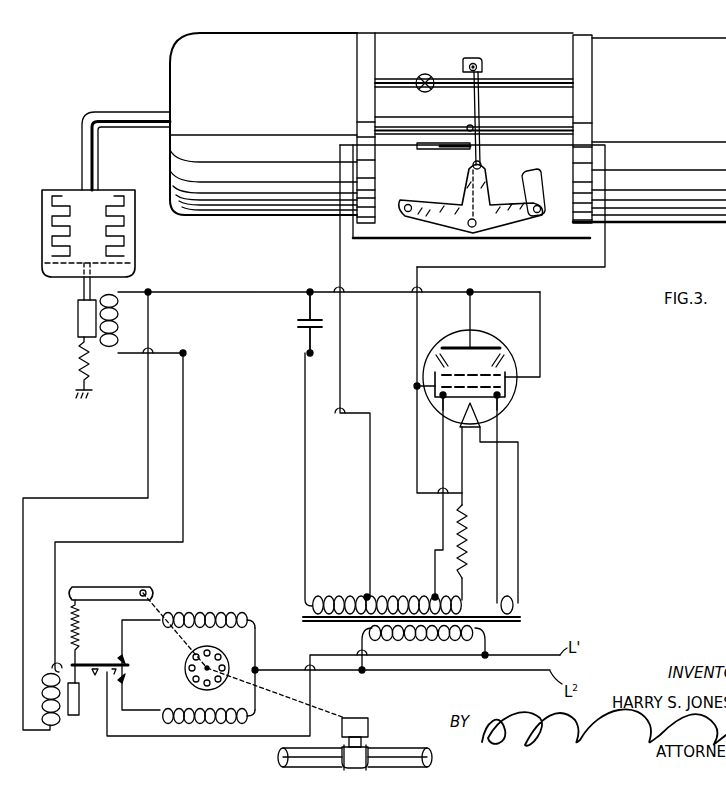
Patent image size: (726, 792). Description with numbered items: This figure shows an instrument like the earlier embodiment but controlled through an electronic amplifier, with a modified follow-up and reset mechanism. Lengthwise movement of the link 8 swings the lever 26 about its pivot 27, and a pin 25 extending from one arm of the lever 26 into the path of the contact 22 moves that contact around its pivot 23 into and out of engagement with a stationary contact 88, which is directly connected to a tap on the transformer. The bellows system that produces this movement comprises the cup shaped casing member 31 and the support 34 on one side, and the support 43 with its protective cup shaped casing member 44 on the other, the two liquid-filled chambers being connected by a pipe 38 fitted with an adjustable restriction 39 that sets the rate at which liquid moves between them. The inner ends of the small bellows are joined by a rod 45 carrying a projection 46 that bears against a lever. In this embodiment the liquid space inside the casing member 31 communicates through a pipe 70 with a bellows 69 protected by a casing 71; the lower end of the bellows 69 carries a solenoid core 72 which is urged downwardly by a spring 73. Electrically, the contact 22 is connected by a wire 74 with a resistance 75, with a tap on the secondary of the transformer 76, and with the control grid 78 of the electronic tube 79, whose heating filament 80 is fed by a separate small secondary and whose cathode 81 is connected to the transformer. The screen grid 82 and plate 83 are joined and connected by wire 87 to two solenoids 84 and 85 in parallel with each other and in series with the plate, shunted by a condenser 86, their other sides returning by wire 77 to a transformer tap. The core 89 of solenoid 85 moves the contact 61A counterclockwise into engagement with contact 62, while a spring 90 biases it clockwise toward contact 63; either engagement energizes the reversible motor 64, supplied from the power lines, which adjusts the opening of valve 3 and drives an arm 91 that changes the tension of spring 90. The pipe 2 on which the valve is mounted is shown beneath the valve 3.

The cup shaped casing member 31 is at (263, 37).
The support 34 is at (364, 33).
The pipe 38 is at (387, 79).
The adjustable restriction 39 is at (425, 74).
The pivot 23 is at (480, 63).
The rod 45 is at (389, 121).
The projection 46 is at (466, 125).
The contact 22 is at (481, 110).
The stationary contact 88 is at (420, 152).
The pin 25 is at (482, 165).
The lever 26 is at (430, 206).
The link 8 is at (537, 188).
The pivot 27 is at (472, 229).
The support 43 is at (591, 36).
The cup shaped casing member 44 is at (682, 38).
The wire 74 is at (606, 240).
The pipe 70 is at (122, 113).
The casing 71 is at (48, 190).
The bellows 69 is at (128, 229).
The solenoid core 72 is at (78, 316).
The spring 73 is at (80, 360).
The solenoid 84 is at (116, 313).
The wire 87 is at (276, 290).
The condenser 86 is at (296, 325).
The screen grid 82 is at (456, 372).
The anode or plate 83 is at (484, 345).
The electronic tube 79 is at (508, 343).
The control grid 78 is at (507, 396).
The cathode 81 is at (450, 404).
The heating filament 80 is at (486, 412).
The wire 77 is at (305, 459).
The resistance 75 is at (472, 508).
The spring 90 is at (73, 602).
The arm 91 is at (118, 588).
The contact 61A is at (118, 661).
The stationary contact 62 is at (122, 658).
The stationary contact 63 is at (122, 679).
The reversible motor 64 is at (220, 664).
The core 89 is at (76, 716).
The solenoid 85 is at (45, 723).
The valve 3 is at (360, 720).
The gas pipe 2 is at (392, 750).
The transformer 76 is at (484, 635).